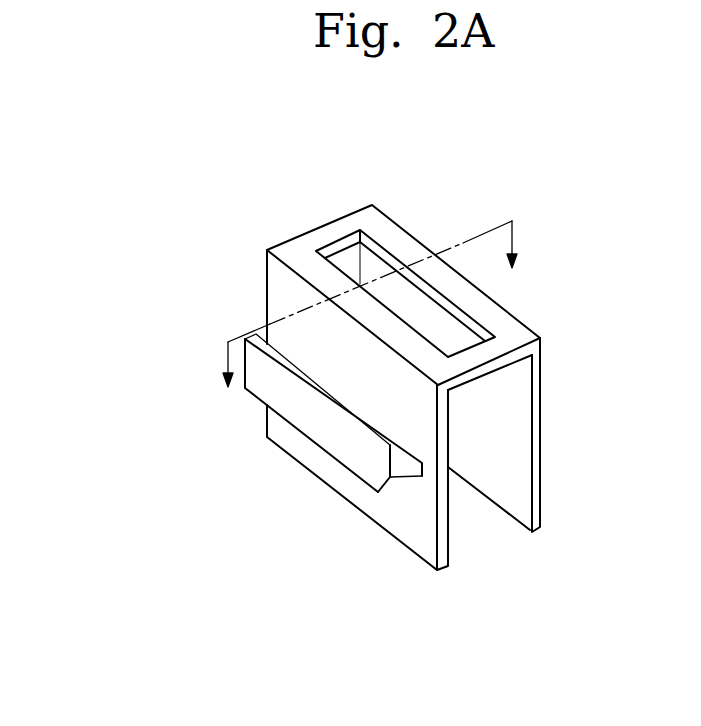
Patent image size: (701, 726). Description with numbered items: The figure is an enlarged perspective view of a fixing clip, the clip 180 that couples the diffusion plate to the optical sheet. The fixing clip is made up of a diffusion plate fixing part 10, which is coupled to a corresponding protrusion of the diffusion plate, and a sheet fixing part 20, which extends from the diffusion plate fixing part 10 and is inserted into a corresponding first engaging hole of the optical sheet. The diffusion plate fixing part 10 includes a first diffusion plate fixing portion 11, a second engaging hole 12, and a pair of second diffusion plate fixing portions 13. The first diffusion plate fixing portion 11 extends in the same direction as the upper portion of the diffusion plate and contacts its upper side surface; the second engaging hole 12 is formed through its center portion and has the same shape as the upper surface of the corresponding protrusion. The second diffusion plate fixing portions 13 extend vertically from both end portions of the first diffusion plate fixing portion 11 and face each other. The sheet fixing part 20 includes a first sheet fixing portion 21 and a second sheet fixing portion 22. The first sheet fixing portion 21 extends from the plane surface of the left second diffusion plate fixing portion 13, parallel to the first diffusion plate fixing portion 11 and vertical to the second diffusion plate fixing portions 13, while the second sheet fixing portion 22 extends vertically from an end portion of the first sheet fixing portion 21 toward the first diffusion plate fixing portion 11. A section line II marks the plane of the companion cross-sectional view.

The clip 180 is at (499, 193).
The diffusion plate fixing part 10 is at (462, 387).
The first diffusion plate fixing portion 11 is at (498, 362).
The second engaging hole 12 is at (466, 330).
The second diffusion plate fixing portions 13 is at (442, 408).
The sheet fixing part 20 is at (333, 442).
The first sheet fixing portion 21 is at (398, 482).
The second sheet fixing portion 22 is at (360, 463).
The section line II-II' II is at (371, 317).